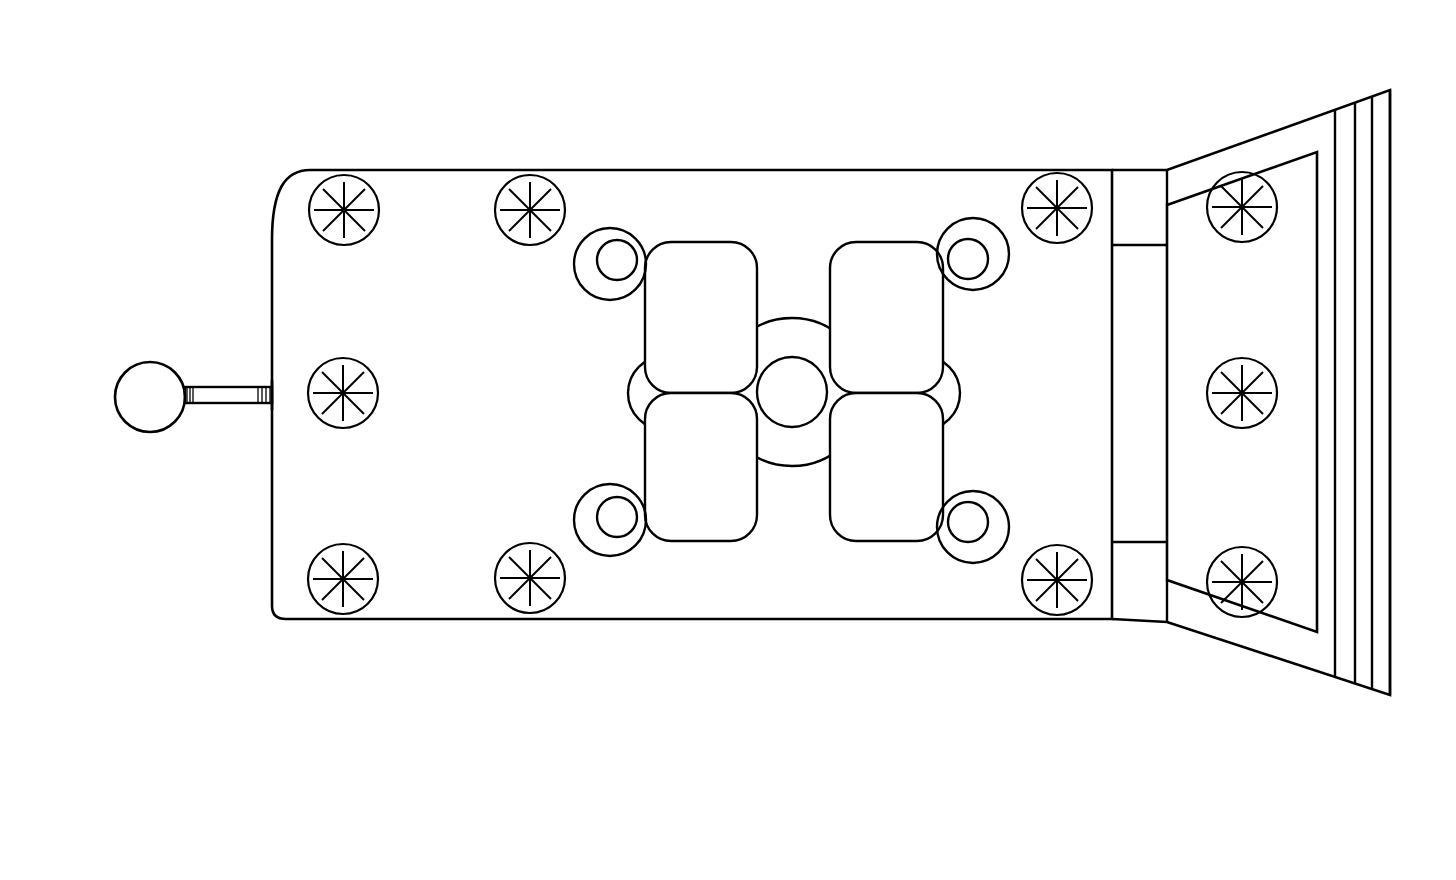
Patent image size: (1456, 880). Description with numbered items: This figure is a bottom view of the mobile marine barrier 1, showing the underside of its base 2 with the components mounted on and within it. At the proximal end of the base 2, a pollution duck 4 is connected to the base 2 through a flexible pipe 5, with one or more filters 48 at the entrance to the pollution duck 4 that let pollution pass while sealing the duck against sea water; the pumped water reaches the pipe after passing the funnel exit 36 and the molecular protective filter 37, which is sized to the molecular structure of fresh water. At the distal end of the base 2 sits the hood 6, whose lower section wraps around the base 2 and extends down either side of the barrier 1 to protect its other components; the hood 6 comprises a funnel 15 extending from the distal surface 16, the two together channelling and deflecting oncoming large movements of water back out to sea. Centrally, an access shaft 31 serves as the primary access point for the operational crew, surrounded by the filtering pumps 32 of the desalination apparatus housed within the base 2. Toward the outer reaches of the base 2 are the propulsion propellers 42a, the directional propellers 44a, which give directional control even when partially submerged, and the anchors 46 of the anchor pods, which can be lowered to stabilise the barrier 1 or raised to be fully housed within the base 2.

The mobile marine barrier 1 is at (1140, 105).
The base 2 is at (692, 394).
The pollution duck 4 is at (152, 432).
The flexible pipe 5 is at (205, 405).
The hood 6 is at (1242, 160).
The funnel 15 is at (1355, 155).
The distal surface 16 is at (1405, 202).
The access shaft 31 is at (794, 392).
The filtering pumps 32 is at (794, 391).
The funnel exit 36 is at (250, 405).
The molecular protective filter 37 is at (268, 388).
The propulsion propellers 42a is at (350, 176).
The directional propellers 44a is at (542, 176).
The anchors 46 is at (625, 252).
The filters 48 is at (190, 385).